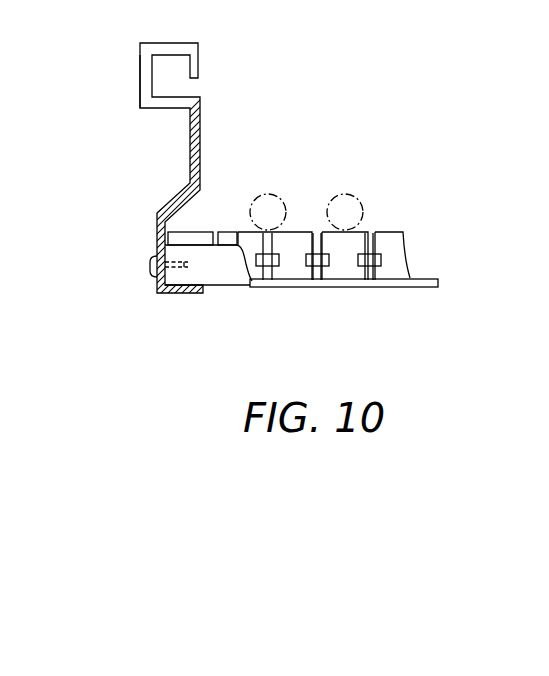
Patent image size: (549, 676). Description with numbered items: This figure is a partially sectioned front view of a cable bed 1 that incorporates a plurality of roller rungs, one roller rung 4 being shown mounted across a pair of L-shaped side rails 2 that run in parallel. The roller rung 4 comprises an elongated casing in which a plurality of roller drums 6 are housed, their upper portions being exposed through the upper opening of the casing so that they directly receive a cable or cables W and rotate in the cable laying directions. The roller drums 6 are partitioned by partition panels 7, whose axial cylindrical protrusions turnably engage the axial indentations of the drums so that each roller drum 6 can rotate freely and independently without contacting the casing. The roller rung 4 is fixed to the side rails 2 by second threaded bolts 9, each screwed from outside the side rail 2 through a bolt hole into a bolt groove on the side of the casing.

The cable bed 1 is at (140, 47).
The side rail 2 is at (140, 92).
The roller rung 4 is at (225, 273).
The roller drum 6 is at (238, 230).
The partition panel 7 is at (375, 275).
The second threaded bolt 9 is at (152, 273).
The cable W is at (270, 194).